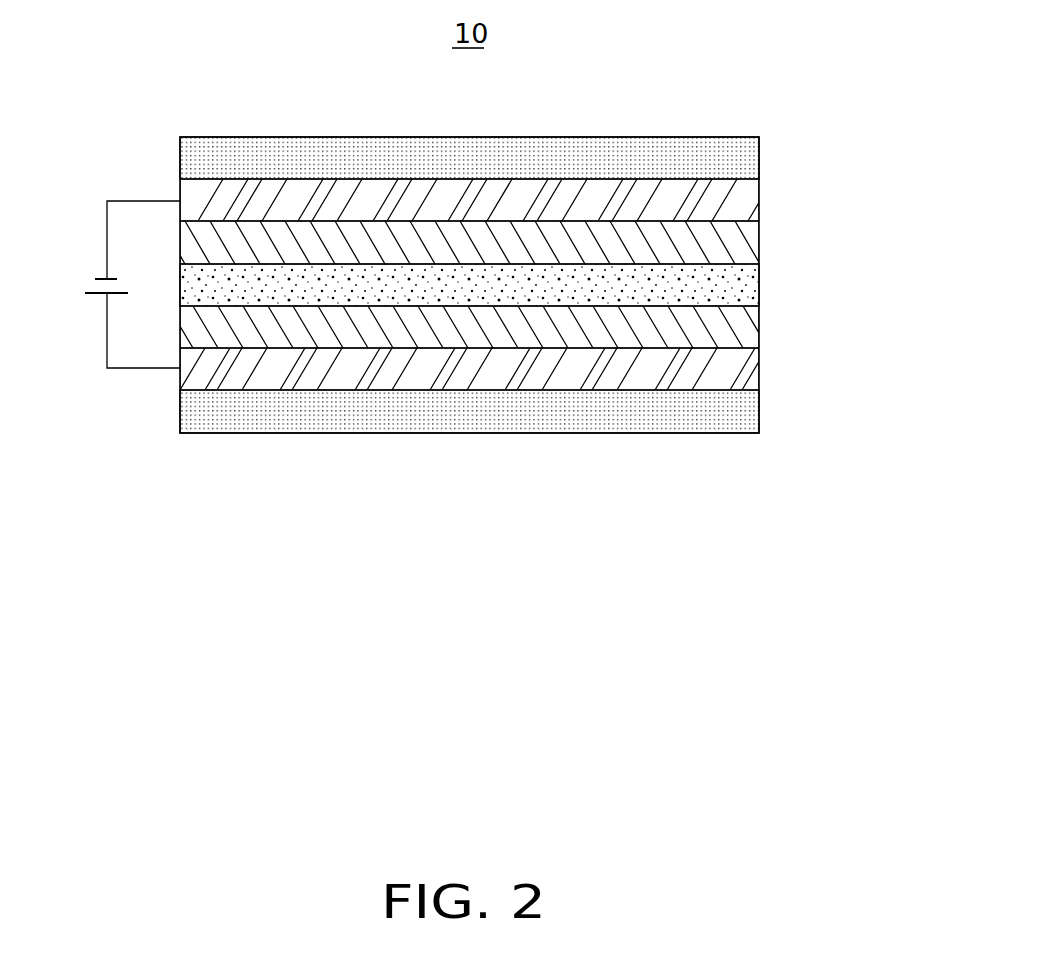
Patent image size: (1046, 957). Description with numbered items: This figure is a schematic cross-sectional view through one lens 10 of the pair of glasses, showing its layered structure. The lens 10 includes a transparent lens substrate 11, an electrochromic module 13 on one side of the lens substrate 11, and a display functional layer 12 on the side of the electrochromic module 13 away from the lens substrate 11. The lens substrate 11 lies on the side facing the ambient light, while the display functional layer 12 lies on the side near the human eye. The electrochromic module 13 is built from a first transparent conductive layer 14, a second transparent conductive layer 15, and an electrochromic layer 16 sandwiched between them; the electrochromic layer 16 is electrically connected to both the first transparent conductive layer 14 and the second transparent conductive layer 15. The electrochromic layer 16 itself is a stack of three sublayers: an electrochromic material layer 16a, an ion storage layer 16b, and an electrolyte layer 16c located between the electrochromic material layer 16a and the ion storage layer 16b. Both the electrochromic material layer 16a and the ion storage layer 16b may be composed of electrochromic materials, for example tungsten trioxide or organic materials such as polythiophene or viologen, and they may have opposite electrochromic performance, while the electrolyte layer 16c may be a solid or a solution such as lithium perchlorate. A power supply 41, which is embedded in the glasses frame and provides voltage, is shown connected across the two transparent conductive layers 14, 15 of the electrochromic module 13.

The lens 10 is at (551, 285).
The lens substrate 11 is at (740, 157).
The display functional layer 12 is at (740, 411).
The electrochromic module 13 is at (551, 284).
The first transparent conductive layer 14 is at (718, 198).
The second transparent conductive layer 15 is at (530, 369).
The electrochromic layer 16 is at (525, 284).
The electrochromic material layer 16a is at (718, 248).
The ion storage layer 16b is at (718, 323).
The electrolyte layer 16c is at (718, 285).
The power supply 41 is at (98, 295).